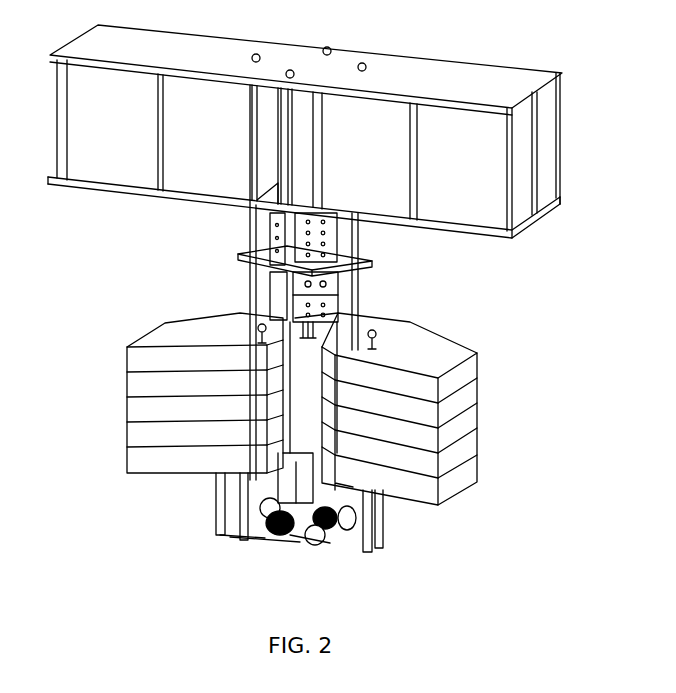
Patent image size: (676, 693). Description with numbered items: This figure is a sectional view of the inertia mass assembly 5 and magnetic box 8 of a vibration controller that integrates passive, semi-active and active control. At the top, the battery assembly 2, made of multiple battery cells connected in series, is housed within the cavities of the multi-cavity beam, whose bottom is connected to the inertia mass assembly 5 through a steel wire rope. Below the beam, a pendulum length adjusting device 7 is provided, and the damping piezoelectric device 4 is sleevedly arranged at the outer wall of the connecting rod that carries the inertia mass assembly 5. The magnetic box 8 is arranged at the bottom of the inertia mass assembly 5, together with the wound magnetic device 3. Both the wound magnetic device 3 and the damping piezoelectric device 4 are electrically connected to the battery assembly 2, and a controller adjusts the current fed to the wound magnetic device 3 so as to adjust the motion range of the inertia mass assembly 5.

The battery assembly 2 is at (494, 182).
The wound magnetic device 3 is at (263, 537).
The damping piezoelectric device 4 is at (303, 360).
The inertia mass assembly 5 is at (457, 432).
The pendulum length adjusting device 7 is at (255, 258).
The magnetic box 8 is at (368, 525).